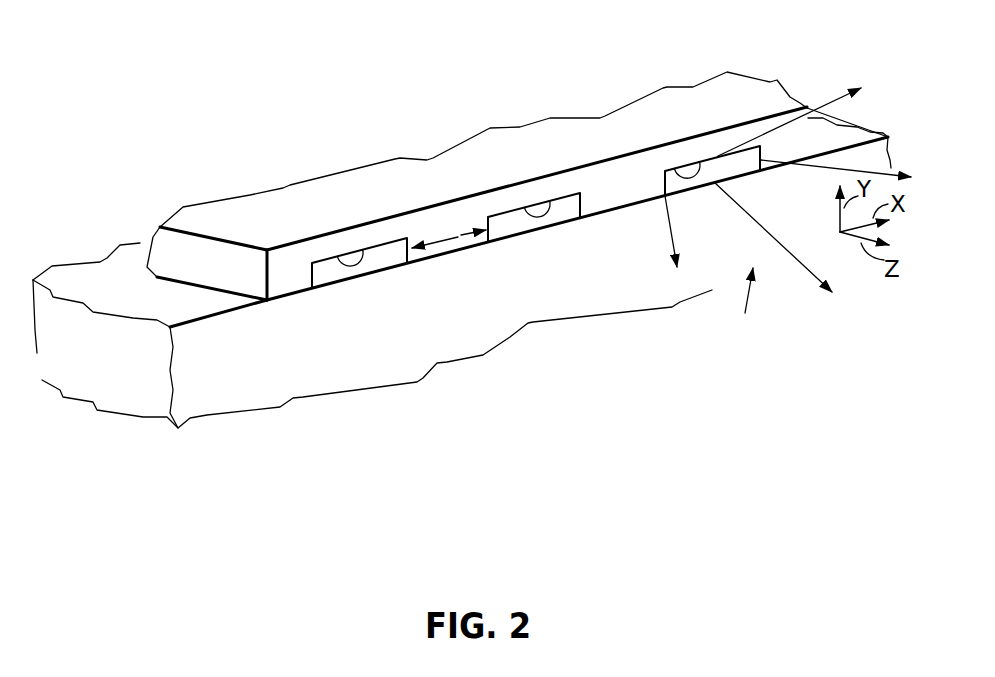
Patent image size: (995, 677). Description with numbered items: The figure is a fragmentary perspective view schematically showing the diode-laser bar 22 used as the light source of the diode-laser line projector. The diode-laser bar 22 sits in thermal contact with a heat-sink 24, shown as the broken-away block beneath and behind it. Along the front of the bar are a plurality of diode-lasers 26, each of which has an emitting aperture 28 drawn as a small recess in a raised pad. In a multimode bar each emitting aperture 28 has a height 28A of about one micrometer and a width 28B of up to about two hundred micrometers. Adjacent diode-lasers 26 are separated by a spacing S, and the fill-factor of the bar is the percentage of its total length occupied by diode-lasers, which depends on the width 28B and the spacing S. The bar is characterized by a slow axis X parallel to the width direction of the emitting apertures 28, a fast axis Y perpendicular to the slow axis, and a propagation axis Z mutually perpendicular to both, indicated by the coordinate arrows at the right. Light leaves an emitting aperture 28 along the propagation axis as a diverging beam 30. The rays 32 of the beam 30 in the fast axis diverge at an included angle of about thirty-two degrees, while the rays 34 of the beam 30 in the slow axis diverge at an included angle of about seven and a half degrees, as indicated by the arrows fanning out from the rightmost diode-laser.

The diode-laser bar 22 is at (462, 140).
The heat-sink 24 is at (222, 413).
The diode-lasers 26 is at (362, 278).
The emitting aperture 28 is at (312, 277).
The height of emitting aperture 28A is at (311, 280).
The width of emitting aperture 28B is at (338, 257).
The diverging beam 30 is at (741, 305).
The rays in fast axis 32 is at (815, 111).
The rays in slow axis 34 is at (858, 171).
The spacing between diode lasers S is at (449, 232).